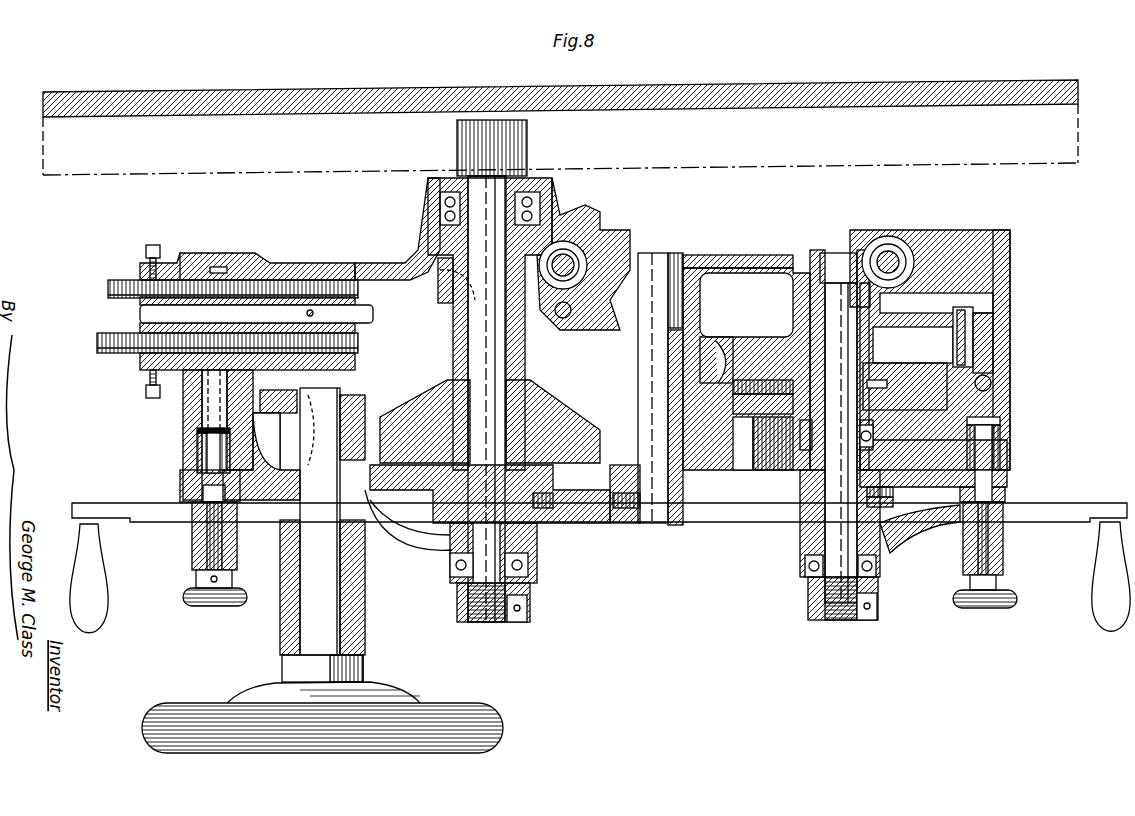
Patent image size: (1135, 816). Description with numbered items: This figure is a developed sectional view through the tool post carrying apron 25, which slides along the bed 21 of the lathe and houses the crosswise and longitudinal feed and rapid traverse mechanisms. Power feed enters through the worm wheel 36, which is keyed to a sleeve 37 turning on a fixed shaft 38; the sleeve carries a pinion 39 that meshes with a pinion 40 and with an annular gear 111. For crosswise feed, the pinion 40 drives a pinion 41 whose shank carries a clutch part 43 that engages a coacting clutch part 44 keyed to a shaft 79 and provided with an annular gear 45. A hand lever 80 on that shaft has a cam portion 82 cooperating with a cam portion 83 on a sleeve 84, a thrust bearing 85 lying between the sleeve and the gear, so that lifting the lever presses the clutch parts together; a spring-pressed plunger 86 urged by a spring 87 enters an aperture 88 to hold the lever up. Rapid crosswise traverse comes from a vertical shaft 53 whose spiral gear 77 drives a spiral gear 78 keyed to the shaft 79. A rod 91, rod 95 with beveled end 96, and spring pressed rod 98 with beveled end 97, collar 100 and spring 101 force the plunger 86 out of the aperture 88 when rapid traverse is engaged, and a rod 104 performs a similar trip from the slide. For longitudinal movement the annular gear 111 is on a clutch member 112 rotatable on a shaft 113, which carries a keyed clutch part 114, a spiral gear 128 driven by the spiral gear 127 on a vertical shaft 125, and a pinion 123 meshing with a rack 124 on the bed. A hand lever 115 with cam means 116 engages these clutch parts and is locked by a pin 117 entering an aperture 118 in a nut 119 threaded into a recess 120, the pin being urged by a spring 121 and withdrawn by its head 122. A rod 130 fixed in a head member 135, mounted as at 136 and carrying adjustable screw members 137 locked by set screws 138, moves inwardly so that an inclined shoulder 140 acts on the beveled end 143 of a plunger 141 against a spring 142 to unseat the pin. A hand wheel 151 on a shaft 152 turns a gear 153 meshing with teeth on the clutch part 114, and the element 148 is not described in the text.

The bed 21 is at (866, 77).
The pinion 123 is at (528, 137).
The rack 124 is at (382, 178).
The spiral gear 127 is at (578, 245).
The vertically extending shaft 125 is at (578, 260).
The pinion 148 is at (600, 270).
The tool post carrying apron 25 is at (724, 255).
The fixed shaft 38 is at (652, 522).
The pinion 39 is at (680, 522).
The worm wheel 36 is at (728, 340).
The clutch part 43 is at (760, 380).
The clutch part 44 is at (755, 396).
The sleeve 37 is at (733, 405).
The pinion 40 is at (733, 430).
The clutch member 112 is at (408, 518).
The shaft 113 is at (445, 395).
The clutch part 114 is at (392, 417).
The cam means 116 is at (537, 536).
The beveled end 143 is at (183, 398).
The plunger 141 is at (183, 405).
The compression spring 142 is at (202, 420).
The recess 120 is at (197, 432).
The nut 119 is at (197, 455).
The aperture 118 is at (180, 478).
The locking pin 117 is at (203, 493).
The gear 153 is at (275, 398).
The annular gear 111 is at (360, 398).
The shaft 152 is at (343, 612).
The hand wheel 151 is at (440, 692).
The hand lever 115 is at (140, 522).
The spring 121 is at (192, 540).
The head 122 is at (205, 606).
The mounting 136 is at (275, 263).
The inclined annular shoulder 140 is at (220, 265).
The head member 135 is at (183, 253).
The adjustable screw members 137 is at (130, 283).
The rod 130 is at (374, 314).
The set screws 138 is at (150, 245).
The spiral gear 128 is at (438, 288).
The spiral gear 78 is at (818, 250).
The spiral gear 77 is at (888, 236).
The vertical shaft 53 is at (900, 250).
The slidably mounted rod 95 is at (950, 293).
The vertically disposed rod 91 is at (913, 345).
The annular gear 45 is at (940, 385).
The beveled end 96 is at (1010, 265).
The beveled end 97 is at (1010, 302).
The spring pressed rod 98 is at (1010, 330).
The vertically disposed rod 104 is at (991, 383).
The collar 100 is at (1000, 420).
The spring 101 is at (1000, 440).
The thrust bearing 85 is at (875, 432).
The pinion 41 is at (873, 446).
The sleeve 84 is at (910, 478).
The cam portion 83 is at (893, 505).
The aperture 88 is at (1005, 492).
The spring-pressed plunger 86 is at (1005, 502).
The hand lever 80 is at (915, 545).
The spring 87 is at (1003, 540).
The shaft 79 is at (805, 515).
The cam portion 82 is at (808, 540).